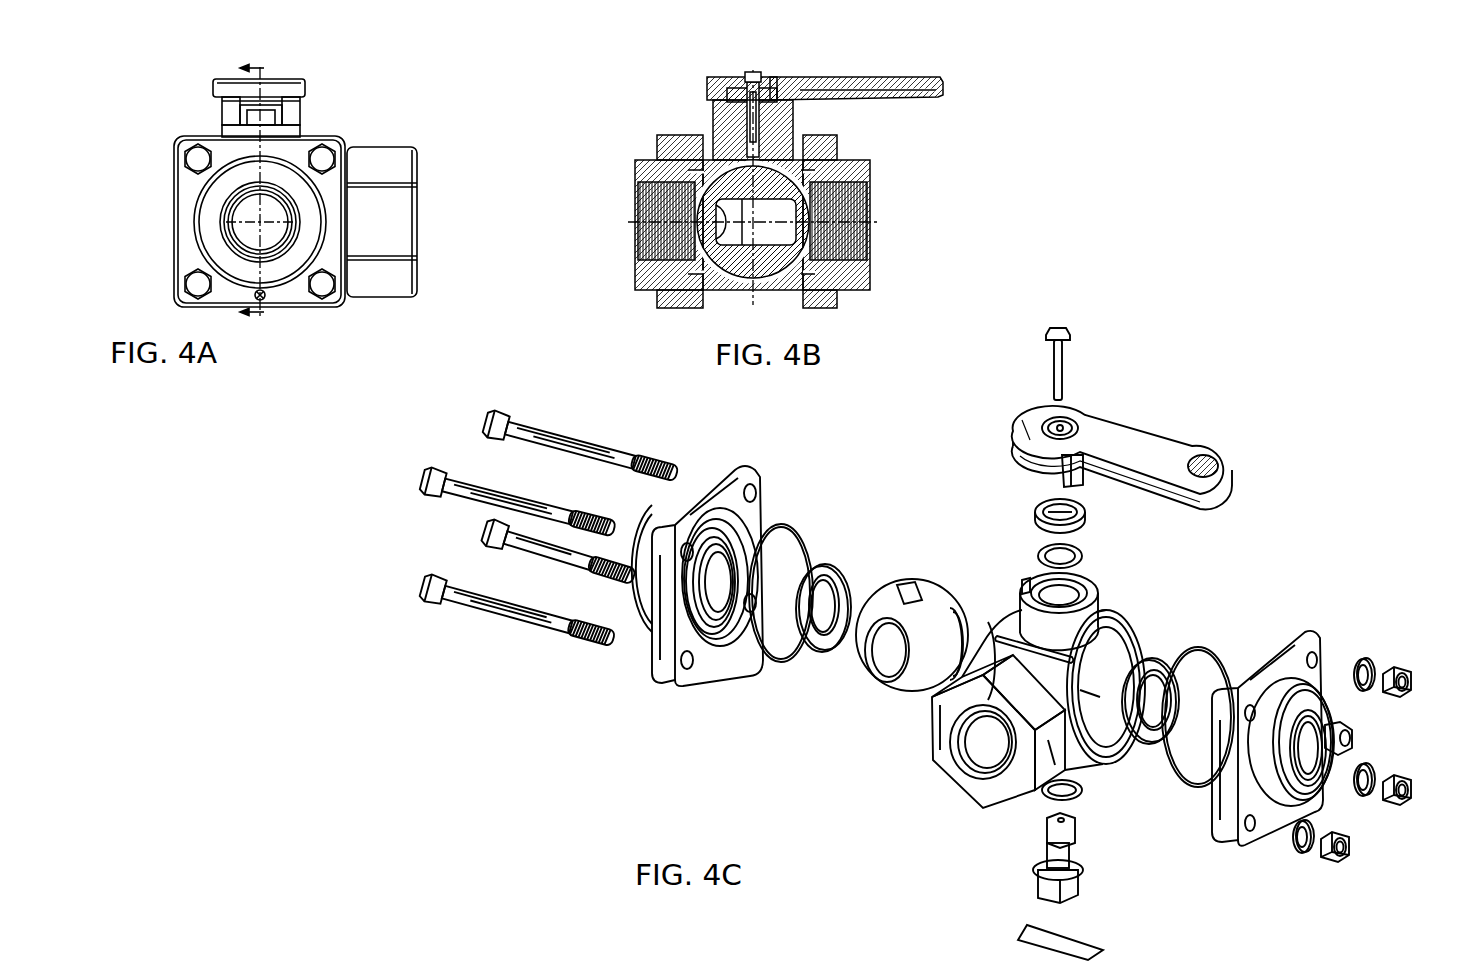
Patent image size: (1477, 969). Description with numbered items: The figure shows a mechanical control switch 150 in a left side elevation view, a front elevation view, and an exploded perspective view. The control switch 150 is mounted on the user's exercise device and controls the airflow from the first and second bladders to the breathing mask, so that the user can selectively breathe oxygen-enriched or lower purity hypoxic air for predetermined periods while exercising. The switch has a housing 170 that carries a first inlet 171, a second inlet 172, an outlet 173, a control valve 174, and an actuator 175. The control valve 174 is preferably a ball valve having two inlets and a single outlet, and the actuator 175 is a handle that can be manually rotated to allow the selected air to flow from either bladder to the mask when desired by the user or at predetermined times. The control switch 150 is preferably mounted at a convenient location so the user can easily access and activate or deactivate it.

In FIG. 4A, the control switch 150 is at (441, 265).
In FIG. 4B, the control switch 150 is at (908, 211).
In FIG. 4C, the control switch 150 is at (1370, 601).
In FIG. 4C, the housing 170 is at (667, 684).
In FIG. 4A, the first inlet 171 is at (195, 238).
In FIG. 4C, the first inlet 171 is at (648, 632).
In FIG. 4C, the second inlet 172 is at (1337, 712).
In FIG. 4A, the outlet 173 is at (402, 147).
In FIG. 4C, the outlet 173 is at (932, 760).
In FIG. 4C, the control valve 174 is at (858, 667).
In FIG. 4A, the actuator 175 is at (306, 81).
In FIG. 4B, the actuator 175 is at (943, 100).
In FIG. 4C, the actuator 175 is at (1153, 437).